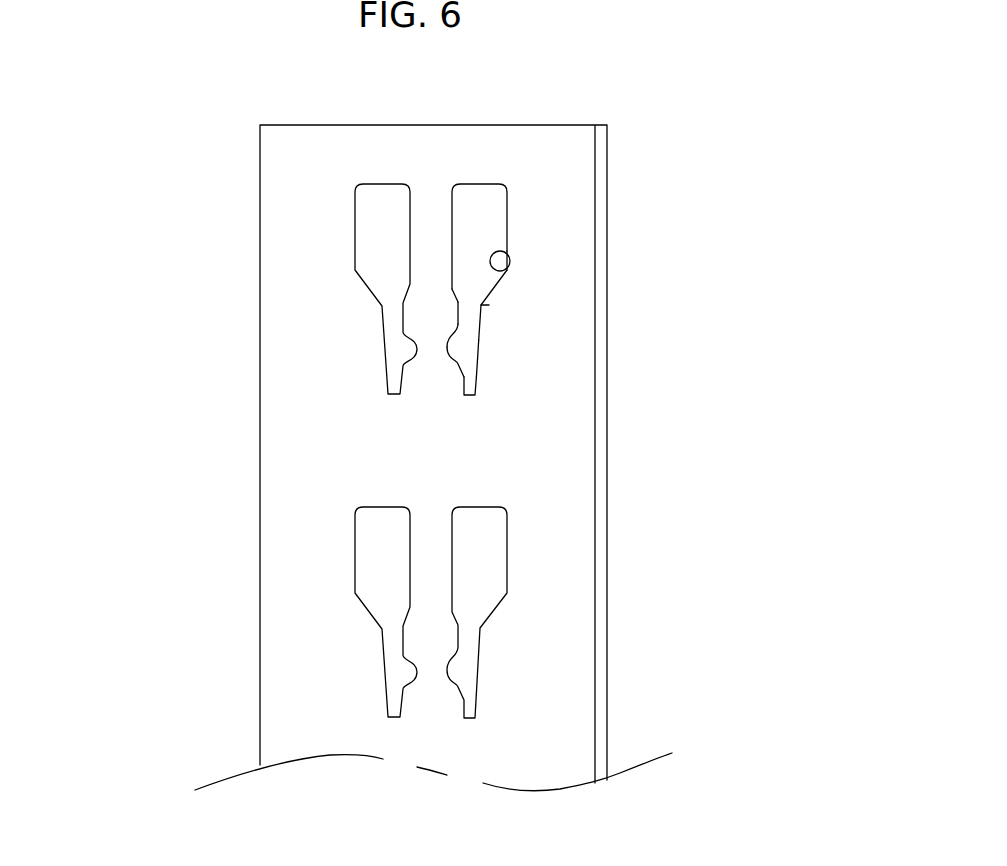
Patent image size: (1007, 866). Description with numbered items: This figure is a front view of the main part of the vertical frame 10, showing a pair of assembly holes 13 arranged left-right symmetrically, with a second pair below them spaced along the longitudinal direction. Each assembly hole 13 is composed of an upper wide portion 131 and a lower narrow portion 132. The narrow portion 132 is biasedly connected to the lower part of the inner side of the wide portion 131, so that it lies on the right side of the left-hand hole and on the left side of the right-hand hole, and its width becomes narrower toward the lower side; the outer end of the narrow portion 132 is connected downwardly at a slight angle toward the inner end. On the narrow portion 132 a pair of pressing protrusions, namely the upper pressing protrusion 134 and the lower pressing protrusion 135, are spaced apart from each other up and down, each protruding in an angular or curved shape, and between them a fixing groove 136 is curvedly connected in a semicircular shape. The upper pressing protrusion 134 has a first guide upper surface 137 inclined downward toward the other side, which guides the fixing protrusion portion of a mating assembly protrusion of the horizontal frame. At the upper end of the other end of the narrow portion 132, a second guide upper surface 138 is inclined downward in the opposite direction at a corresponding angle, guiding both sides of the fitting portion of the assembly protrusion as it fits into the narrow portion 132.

The vertical frame 10 is at (386, 458).
The assembly hole 13 is at (570, 333).
The wide portion 131 is at (485, 227).
The narrow portion 132 is at (473, 309).
The upper pressing protrusion 134 is at (458, 322).
The lower pressing protrusion 135 is at (463, 377).
The fixing groove 136 is at (458, 344).
The first guide upper surface 137 is at (453, 290).
The second guide upper surface 138 is at (505, 251).